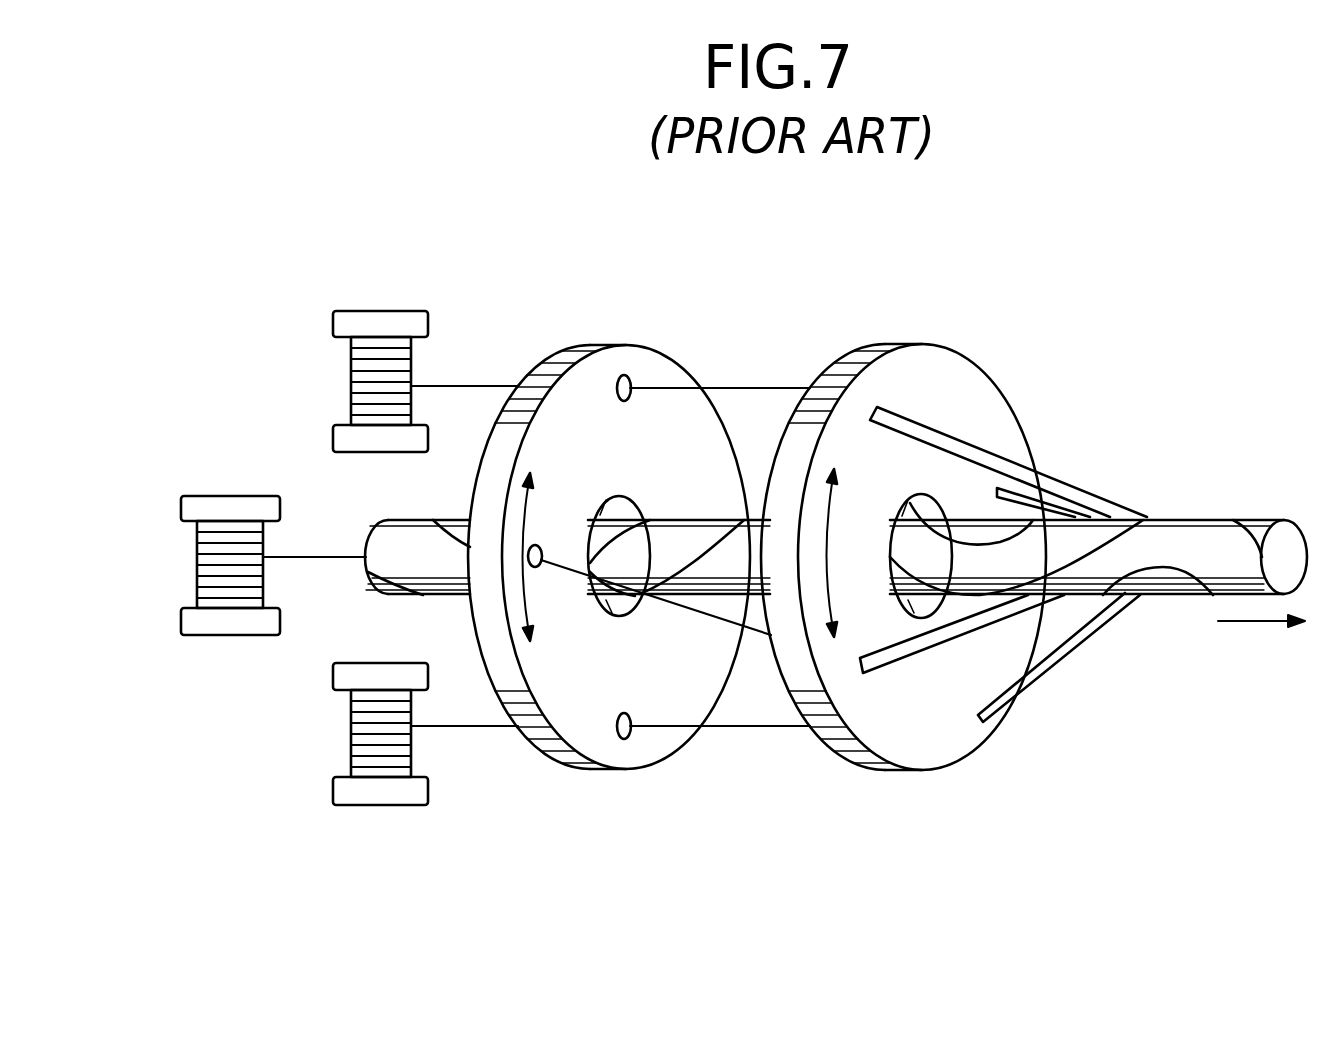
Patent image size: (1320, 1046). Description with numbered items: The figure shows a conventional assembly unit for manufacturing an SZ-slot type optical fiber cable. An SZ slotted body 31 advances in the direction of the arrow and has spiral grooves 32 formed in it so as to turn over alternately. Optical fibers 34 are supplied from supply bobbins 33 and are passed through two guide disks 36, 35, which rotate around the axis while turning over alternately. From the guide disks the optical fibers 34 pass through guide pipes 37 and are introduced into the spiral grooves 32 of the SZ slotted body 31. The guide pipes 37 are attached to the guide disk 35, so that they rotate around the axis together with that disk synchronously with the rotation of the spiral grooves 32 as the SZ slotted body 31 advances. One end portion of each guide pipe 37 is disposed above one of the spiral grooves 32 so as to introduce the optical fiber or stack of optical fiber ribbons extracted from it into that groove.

The SZ slotted body 31 is at (1197, 533).
The spiral grooves 32 is at (1165, 570).
The supply bobbins 33 is at (362, 311).
The optical fibers 34 is at (750, 388).
The guide disk 35 is at (900, 344).
The guide disk 36 is at (593, 345).
The guide pipes 37 is at (965, 438).